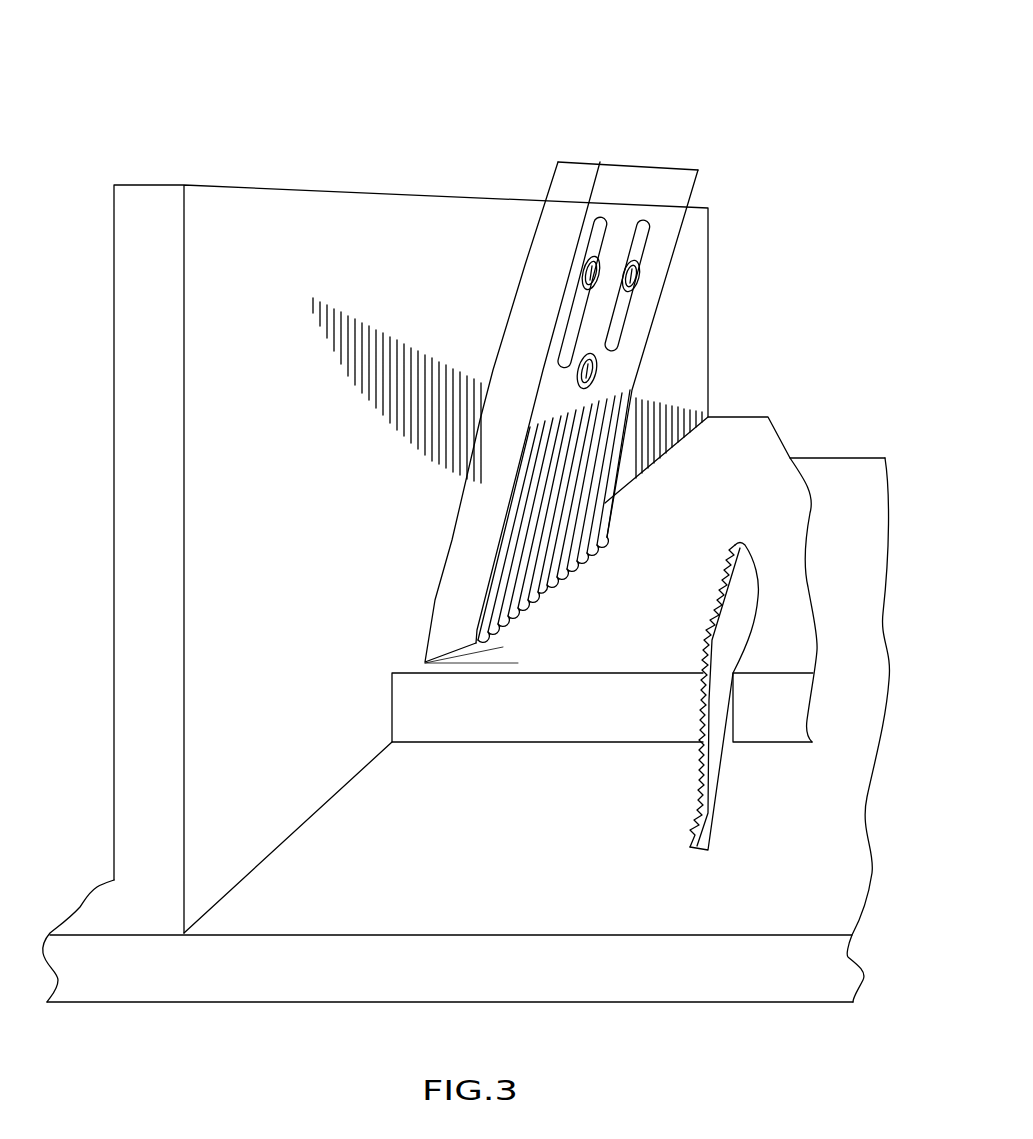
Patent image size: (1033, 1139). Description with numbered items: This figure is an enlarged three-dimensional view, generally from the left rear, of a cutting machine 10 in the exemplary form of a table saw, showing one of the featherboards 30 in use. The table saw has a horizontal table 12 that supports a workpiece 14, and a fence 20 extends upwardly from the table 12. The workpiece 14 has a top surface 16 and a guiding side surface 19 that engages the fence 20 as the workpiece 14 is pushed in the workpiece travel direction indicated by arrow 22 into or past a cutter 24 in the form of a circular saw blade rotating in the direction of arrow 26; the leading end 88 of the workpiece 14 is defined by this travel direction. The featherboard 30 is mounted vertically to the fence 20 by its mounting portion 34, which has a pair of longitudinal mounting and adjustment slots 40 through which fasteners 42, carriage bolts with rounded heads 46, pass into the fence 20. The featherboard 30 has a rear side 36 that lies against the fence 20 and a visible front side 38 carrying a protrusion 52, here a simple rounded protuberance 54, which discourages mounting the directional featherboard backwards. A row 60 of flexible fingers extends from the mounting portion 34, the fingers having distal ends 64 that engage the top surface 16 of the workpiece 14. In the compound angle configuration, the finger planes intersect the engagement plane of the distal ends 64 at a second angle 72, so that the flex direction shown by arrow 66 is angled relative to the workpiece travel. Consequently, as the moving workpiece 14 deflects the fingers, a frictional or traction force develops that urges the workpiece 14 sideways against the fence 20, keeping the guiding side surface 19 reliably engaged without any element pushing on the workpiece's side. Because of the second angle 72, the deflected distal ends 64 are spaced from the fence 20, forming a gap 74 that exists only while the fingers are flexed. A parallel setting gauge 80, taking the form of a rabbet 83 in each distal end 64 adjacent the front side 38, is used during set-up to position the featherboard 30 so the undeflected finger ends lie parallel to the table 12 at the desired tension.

The cutting machine 10 is at (733, 64).
The horizontal table 12 is at (501, 888).
The workpiece 14 is at (757, 453).
The top surface 16 is at (780, 470).
The guiding side surface 19 is at (388, 707).
The fence 20 is at (332, 225).
The workpiece travel direction arrow 22 is at (771, 558).
The cutter 24 is at (740, 600).
The arrow 26 is at (714, 542).
The featherboard 30 is at (544, 393).
The mounting portion 34 is at (628, 220).
The rear side 36 is at (553, 180).
The front side 38 is at (618, 177).
The longitudinal mounting and adjustment slots 40 is at (573, 325).
The fasteners 42 is at (612, 264).
The rounded heads 46 is at (622, 288).
The protrusion 52 is at (623, 361).
The rounded protuberance 54 is at (589, 373).
The row of flexible fingers 60 is at (427, 563).
The distal ends 64 is at (520, 603).
The arrow 66 is at (448, 650).
The second angle 72 is at (509, 652).
The gap 74 is at (417, 656).
The parallel setting gauge 80 is at (630, 517).
The rabbet 83 is at (597, 543).
The leading end 88 is at (795, 728).